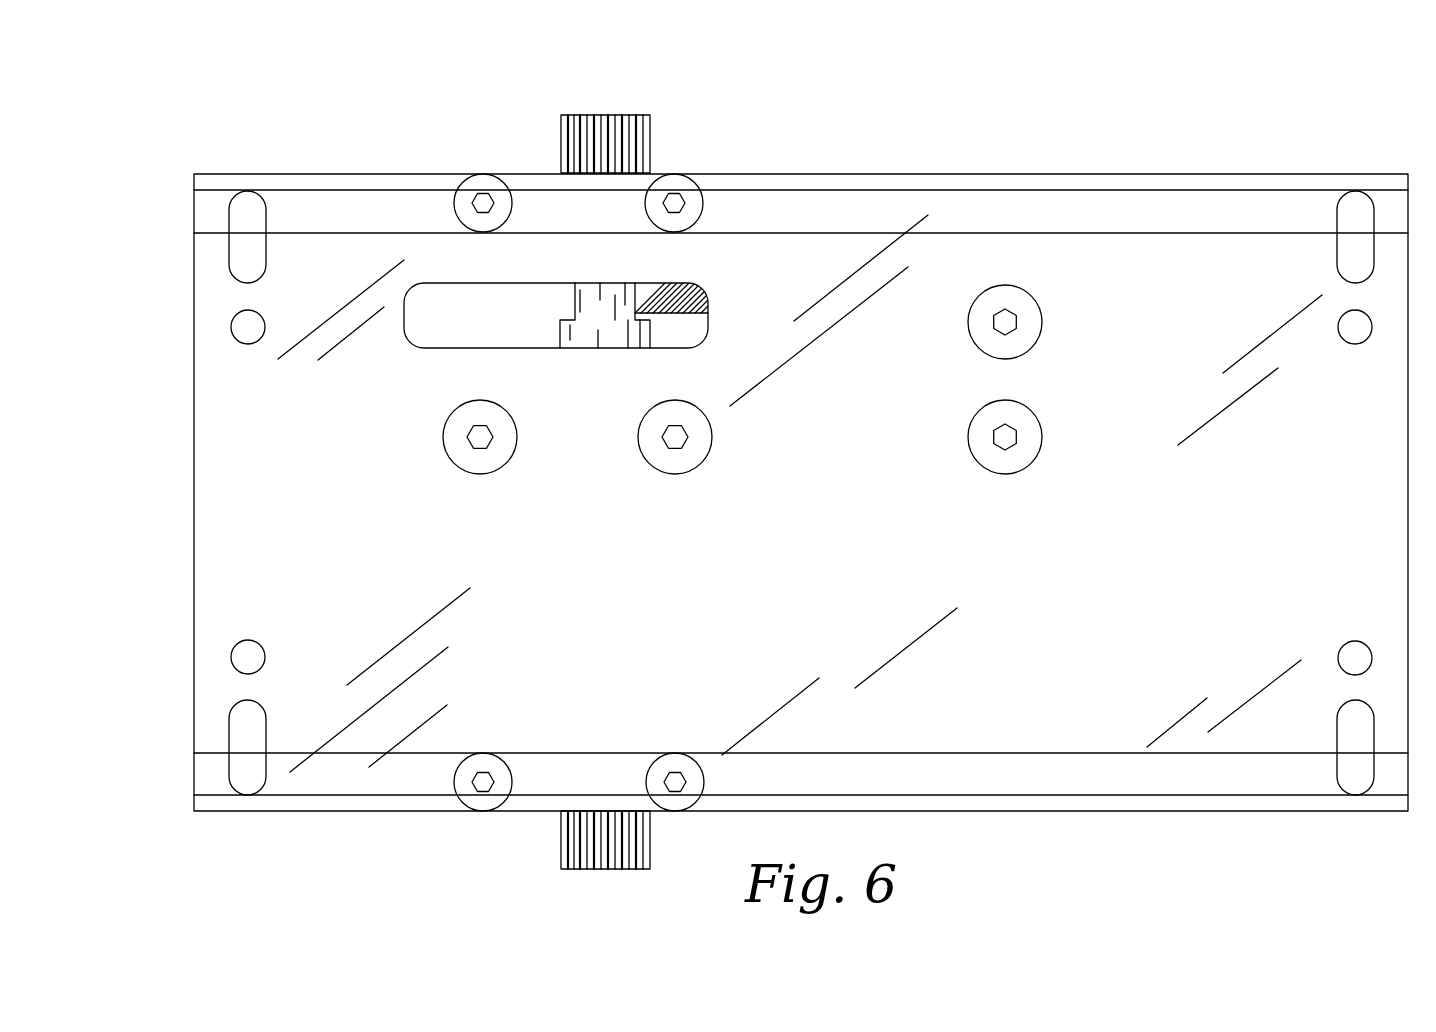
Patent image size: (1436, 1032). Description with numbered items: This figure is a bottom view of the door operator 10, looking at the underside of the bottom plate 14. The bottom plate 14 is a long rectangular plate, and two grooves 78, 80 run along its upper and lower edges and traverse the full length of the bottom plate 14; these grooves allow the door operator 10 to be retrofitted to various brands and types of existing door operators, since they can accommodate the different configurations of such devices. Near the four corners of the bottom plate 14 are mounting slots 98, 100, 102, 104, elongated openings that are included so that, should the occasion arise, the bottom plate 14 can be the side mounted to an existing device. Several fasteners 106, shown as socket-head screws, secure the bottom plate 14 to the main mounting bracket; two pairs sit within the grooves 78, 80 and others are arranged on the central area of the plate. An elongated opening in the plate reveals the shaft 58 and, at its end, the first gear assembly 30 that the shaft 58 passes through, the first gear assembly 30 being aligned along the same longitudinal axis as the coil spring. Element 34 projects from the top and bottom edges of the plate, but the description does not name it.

The door operator 10 is at (1140, 110).
The bottom plate 14 is at (1185, 592).
The first gear assembly 30 is at (653, 315).
The threaded bolt 34 is at (560, 128).
The shaft 58 is at (575, 308).
The groove 78 is at (196, 202).
The groove 80 is at (198, 775).
The mounting slot 98 is at (268, 258).
The mounting slot 100 is at (1337, 258).
The mounting slot 102 is at (266, 727).
The mounting slot 104 is at (1338, 748).
The fastener 106 is at (665, 232).